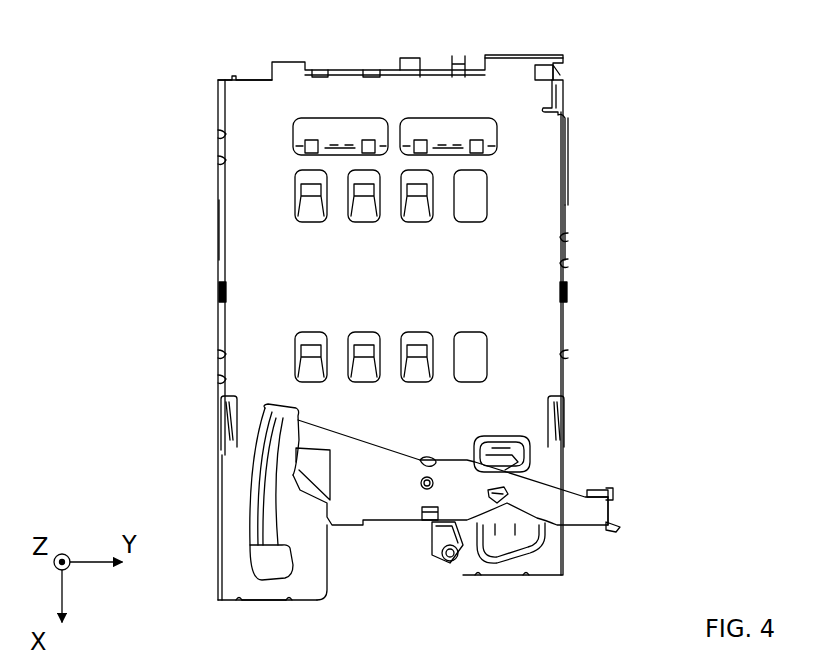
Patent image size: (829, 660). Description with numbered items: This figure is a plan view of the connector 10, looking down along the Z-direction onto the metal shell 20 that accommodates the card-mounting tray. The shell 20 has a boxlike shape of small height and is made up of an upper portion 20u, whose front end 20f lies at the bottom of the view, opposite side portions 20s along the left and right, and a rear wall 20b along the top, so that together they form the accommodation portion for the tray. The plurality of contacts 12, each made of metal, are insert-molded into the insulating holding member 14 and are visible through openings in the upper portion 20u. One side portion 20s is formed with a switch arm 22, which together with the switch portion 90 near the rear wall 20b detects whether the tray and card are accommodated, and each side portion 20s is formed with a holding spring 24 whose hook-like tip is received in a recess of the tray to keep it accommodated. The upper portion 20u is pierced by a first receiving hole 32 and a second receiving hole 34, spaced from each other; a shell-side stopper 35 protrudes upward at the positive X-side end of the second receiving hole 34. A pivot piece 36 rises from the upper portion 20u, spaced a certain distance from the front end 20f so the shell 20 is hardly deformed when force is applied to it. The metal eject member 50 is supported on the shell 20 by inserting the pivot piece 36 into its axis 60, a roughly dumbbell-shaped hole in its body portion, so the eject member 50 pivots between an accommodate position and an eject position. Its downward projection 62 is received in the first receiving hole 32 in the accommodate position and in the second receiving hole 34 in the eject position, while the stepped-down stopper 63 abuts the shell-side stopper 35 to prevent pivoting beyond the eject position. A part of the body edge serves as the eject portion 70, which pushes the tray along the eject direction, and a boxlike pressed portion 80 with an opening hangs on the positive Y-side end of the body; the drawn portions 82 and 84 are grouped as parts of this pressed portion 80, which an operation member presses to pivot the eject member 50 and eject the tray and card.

The connector 10 is at (212, 148).
The shell 20 is at (230, 200).
The upper portion 20u is at (232, 100).
The rear wall 20b is at (340, 70).
The side portions 20s is at (218, 233).
The front end 20f is at (263, 600).
The switch arm 22 is at (568, 137).
The holding spring 24 is at (225, 420).
The contacts 12 is at (310, 355).
The holding member 14 is at (483, 352).
The first receiving hole 32 is at (445, 455).
The second receiving hole 34 is at (440, 563).
The shell-side stopper 35 is at (460, 563).
The pivot piece 36 is at (500, 492).
The eject member 50 is at (330, 482).
The axis 60 is at (520, 505).
The projection 62 is at (427, 489).
The stopper 63 is at (430, 520).
The eject portion 70 is at (327, 580).
The pressed portion 80 is at (740, 470).
The engaging hook 82 is at (615, 493).
The press portion 84 is at (615, 505).
The switch portion 90 is at (563, 68).